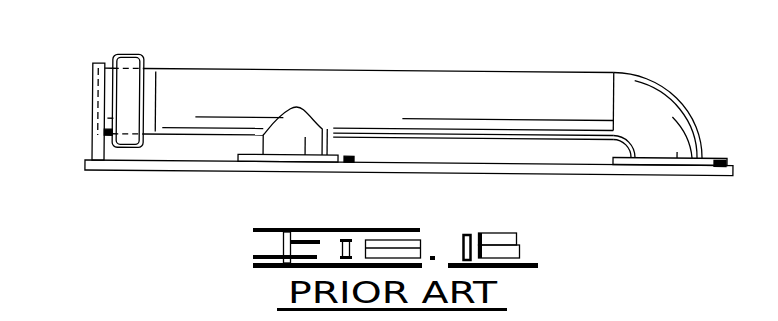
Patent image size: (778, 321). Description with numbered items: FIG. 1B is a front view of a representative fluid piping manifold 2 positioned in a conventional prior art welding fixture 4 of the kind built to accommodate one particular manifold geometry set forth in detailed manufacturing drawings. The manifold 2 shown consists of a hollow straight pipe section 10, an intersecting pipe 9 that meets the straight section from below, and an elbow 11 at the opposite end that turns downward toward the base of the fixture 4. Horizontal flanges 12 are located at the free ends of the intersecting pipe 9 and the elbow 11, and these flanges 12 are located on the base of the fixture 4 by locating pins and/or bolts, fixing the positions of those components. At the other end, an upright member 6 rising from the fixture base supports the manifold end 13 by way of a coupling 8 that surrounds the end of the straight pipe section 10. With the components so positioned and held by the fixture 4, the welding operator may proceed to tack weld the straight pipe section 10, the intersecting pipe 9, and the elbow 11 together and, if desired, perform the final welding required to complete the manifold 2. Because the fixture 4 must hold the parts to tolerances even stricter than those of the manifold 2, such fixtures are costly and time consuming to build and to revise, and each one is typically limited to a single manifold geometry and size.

The manifold 2 is at (483, 96).
The fixture 4 is at (558, 170).
The upright member 6 is at (97, 145).
The coupling 8 is at (128, 60).
The intersecting pipe 9 is at (297, 135).
The hollow straight pipe section 10 is at (396, 104).
The elbow 11 is at (643, 98).
The horizontal flanges 12 is at (352, 152).
The manifold end 13 is at (148, 82).